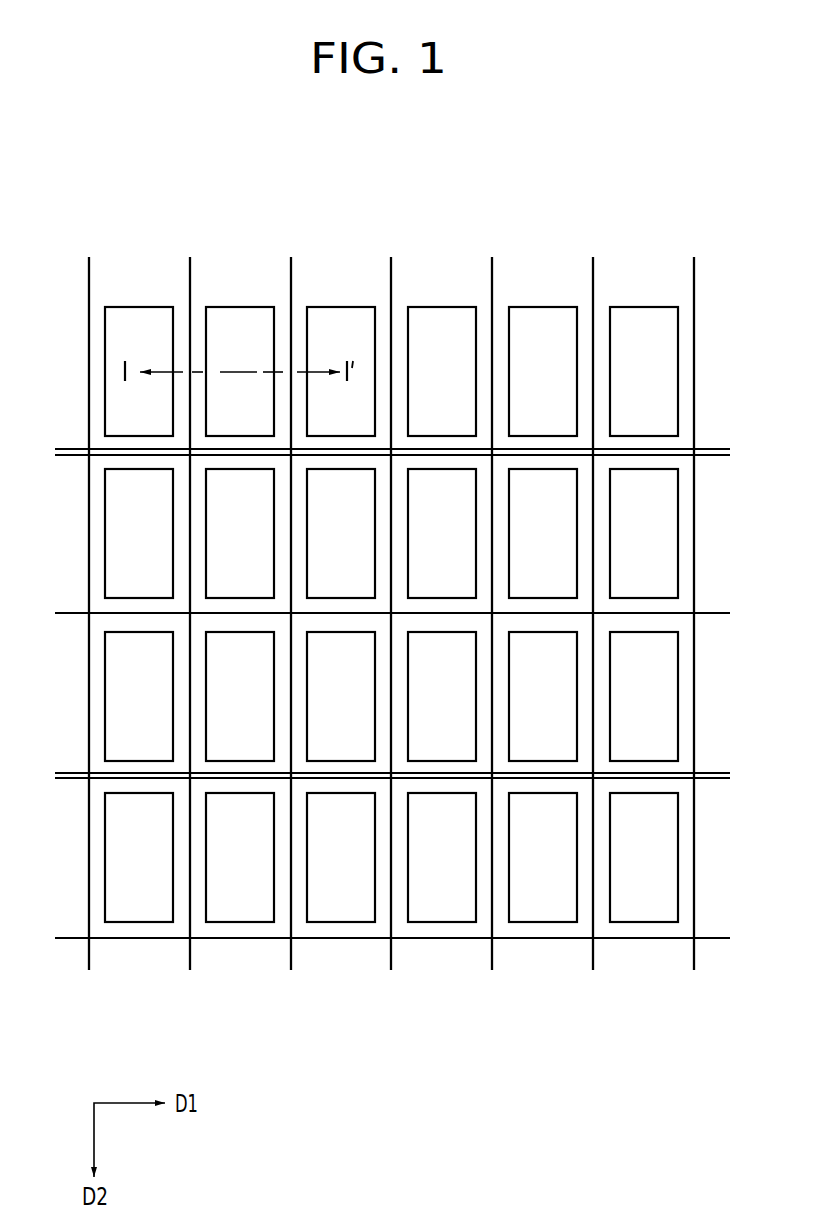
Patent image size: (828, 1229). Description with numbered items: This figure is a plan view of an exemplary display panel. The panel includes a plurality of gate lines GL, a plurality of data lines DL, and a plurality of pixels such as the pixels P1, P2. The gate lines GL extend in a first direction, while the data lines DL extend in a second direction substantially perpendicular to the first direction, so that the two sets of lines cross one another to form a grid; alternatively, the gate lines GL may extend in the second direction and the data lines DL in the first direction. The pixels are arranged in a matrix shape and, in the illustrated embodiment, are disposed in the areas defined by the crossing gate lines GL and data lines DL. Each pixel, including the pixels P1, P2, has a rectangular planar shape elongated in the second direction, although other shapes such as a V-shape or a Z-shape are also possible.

The data lines DL is at (384, 600).
The gate lines GL is at (377, 689).
The pixel P1 is at (139, 371).
The pixel P2 is at (139, 533).